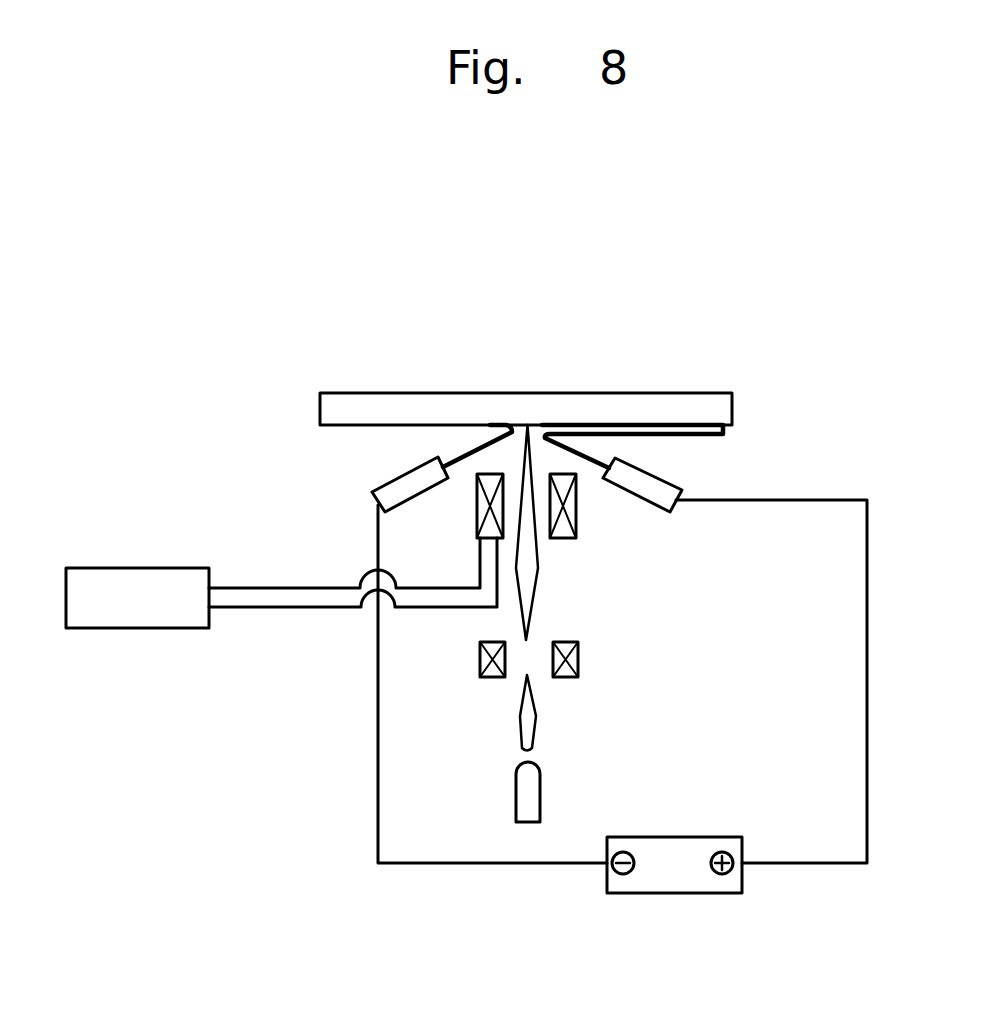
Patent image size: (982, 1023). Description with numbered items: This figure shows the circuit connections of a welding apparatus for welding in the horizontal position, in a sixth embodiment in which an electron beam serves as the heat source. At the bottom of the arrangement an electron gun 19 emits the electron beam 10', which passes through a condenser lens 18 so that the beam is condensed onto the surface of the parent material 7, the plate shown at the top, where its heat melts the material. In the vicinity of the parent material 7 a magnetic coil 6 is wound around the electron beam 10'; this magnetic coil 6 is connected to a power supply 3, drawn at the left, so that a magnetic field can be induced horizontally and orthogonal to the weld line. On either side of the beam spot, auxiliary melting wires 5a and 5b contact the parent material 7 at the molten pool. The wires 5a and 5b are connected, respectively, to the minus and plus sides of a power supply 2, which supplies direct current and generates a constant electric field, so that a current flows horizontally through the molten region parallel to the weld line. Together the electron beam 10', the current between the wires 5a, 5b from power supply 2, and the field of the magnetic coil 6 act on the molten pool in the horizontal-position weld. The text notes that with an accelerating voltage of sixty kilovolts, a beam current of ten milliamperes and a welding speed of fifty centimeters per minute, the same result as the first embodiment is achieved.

The parent material 7 is at (320, 410).
The auxiliary wire 5a is at (457, 462).
The auxiliary wire 5b is at (584, 452).
The electron beam 10' is at (591, 515).
The magnetic coil 6 is at (478, 509).
The power supply 3 is at (116, 616).
The condenser lens 18 is at (579, 653).
The electron gun 19 is at (532, 790).
The power supply 2 is at (641, 888).